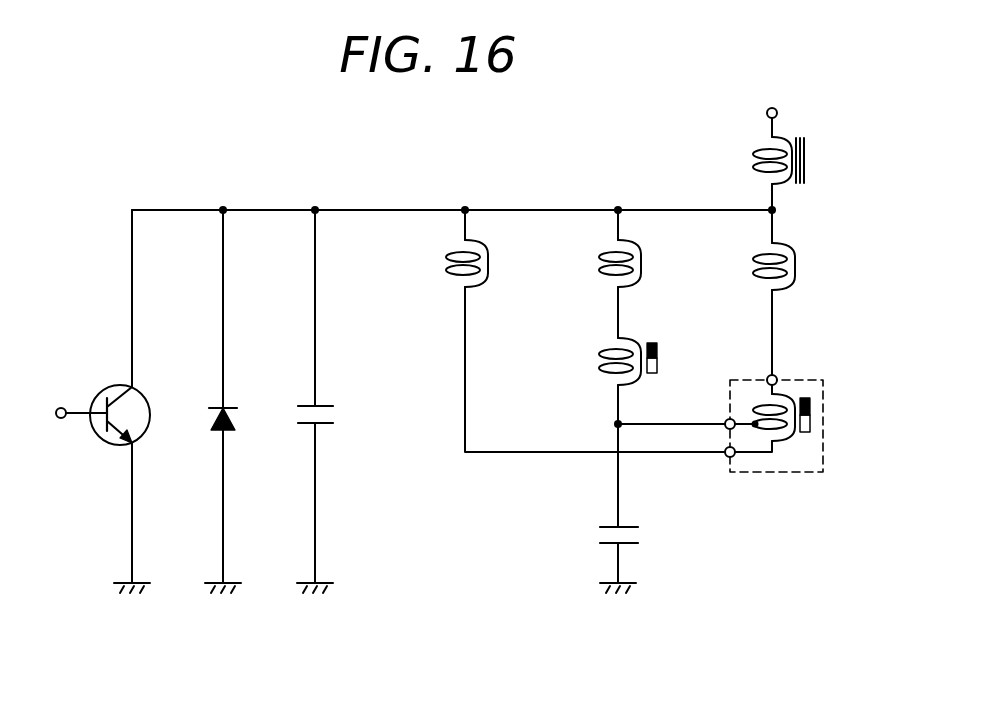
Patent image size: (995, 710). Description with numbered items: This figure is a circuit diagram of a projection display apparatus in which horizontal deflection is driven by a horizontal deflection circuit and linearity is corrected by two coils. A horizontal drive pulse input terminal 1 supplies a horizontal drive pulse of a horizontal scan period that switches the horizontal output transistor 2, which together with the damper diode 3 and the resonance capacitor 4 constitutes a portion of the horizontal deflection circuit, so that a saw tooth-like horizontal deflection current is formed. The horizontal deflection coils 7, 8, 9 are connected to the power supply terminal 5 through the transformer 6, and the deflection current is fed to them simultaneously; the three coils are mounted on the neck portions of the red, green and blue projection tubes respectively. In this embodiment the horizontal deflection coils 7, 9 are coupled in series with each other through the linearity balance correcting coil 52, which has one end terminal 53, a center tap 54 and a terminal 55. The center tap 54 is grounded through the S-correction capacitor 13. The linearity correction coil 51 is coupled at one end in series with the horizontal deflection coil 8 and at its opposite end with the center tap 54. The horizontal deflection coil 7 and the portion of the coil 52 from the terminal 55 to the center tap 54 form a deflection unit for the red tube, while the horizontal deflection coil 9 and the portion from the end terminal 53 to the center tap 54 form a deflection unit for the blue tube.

The horizontal drive pulse input terminal 1 is at (58, 405).
The horizontal output transistor 2 is at (141, 393).
The damper diode 3 is at (232, 405).
The resonance capacitor 4 is at (326, 405).
The power supply terminal 5 is at (765, 116).
The transformer 6 is at (805, 168).
The horizontal deflection coil 7 is at (448, 268).
The horizontal deflection coil 8 is at (598, 268).
The horizontal deflection coil 9 is at (751, 268).
The S-correction capacitor 13 is at (597, 538).
The linearity correction coil 51 is at (600, 362).
The linearity balance correcting coil 52 is at (793, 473).
The end terminal 53 is at (778, 377).
The center tap 54 is at (725, 420).
The terminal 55 is at (727, 457).